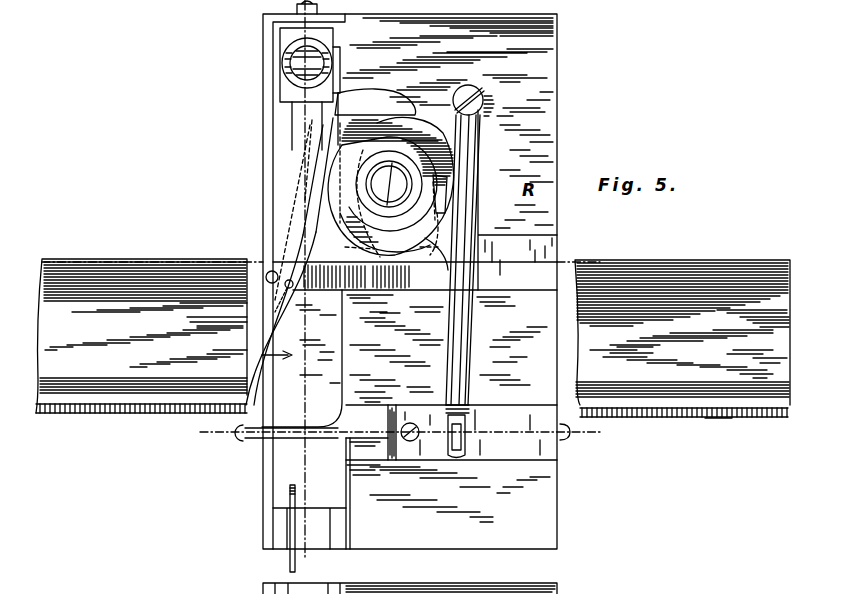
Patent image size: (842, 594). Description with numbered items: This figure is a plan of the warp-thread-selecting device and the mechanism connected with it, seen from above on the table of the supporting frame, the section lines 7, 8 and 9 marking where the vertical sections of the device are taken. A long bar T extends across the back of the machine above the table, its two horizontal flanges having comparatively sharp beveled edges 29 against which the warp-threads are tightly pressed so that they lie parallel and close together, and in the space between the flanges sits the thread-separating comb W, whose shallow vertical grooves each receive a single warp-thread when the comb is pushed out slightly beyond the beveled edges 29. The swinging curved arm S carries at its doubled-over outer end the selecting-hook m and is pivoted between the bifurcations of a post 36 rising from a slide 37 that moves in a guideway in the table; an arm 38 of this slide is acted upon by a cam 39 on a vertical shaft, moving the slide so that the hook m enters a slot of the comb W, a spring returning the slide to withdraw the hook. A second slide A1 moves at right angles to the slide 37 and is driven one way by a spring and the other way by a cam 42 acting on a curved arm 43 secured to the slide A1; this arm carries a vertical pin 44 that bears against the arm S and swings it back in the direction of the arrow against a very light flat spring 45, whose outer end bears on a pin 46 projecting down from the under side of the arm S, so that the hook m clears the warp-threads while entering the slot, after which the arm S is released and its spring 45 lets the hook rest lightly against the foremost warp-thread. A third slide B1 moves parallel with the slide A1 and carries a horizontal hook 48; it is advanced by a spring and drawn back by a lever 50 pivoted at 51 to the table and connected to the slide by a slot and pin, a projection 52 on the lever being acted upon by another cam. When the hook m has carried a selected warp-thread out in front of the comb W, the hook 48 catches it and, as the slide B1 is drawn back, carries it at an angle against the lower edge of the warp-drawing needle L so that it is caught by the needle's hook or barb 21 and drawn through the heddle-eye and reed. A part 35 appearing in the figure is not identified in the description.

The section line 7 is at (305, 286).
The section line 8 is at (252, 257).
The section line 9 is at (232, 432).
The hook or barb 21 is at (289, 497).
The beveled edges 29 is at (682, 398).
The cam groove 35 is at (390, 232).
The post 36 is at (288, 35).
The slide 37 is at (346, 358).
The arm 38 is at (375, 117).
The cam 39 is at (416, 130).
The cam 42 is at (385, 190).
The curved arm 43 is at (440, 226).
The vertical pin 44 is at (266, 272).
The flat spring 45 is at (332, 129).
The pin 46 is at (281, 300).
The hook 48 is at (240, 442).
The lever 50 is at (477, 286).
The pivot 51 is at (472, 90).
The projection 52 is at (448, 179).
The slide A1 is at (517, 200).
The slide B1 is at (400, 477).
The warp-drawing needle L is at (292, 523).
The swinging curved arm S is at (297, 205).
The bar T is at (413, 338).
The thread-separating comb W is at (718, 425).
The selecting-hook m is at (200, 420).